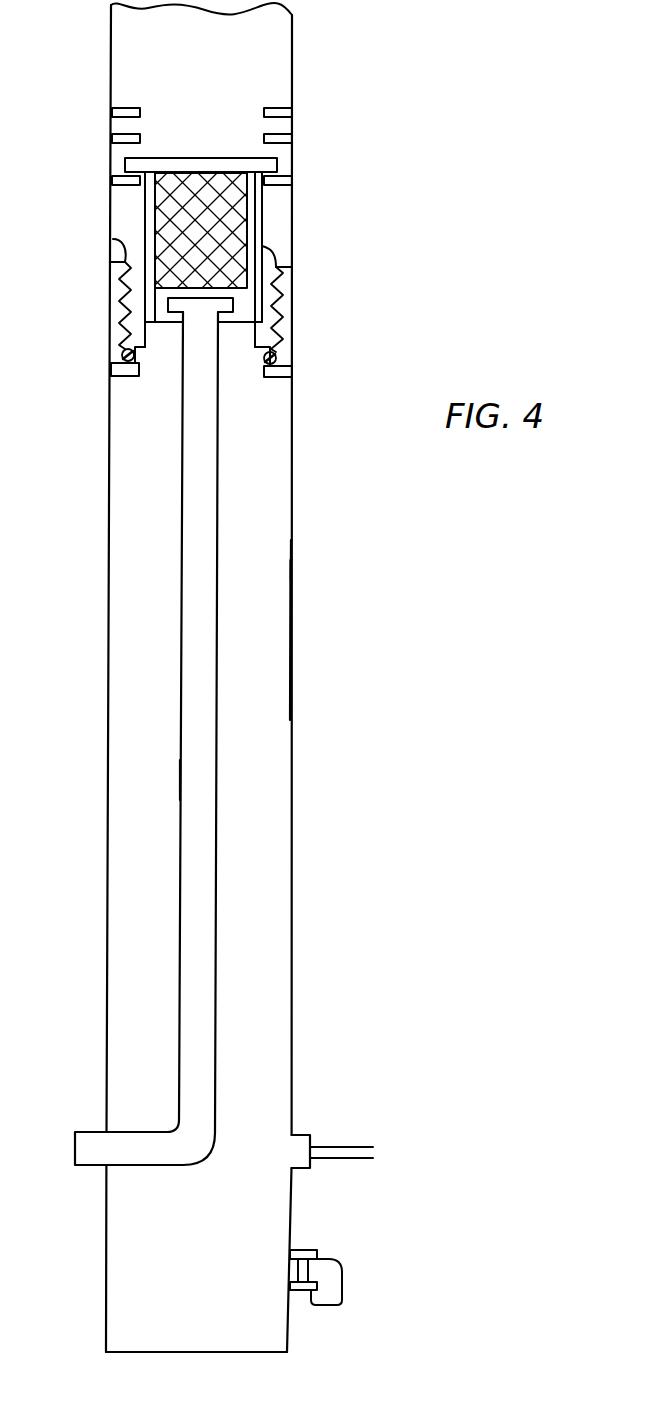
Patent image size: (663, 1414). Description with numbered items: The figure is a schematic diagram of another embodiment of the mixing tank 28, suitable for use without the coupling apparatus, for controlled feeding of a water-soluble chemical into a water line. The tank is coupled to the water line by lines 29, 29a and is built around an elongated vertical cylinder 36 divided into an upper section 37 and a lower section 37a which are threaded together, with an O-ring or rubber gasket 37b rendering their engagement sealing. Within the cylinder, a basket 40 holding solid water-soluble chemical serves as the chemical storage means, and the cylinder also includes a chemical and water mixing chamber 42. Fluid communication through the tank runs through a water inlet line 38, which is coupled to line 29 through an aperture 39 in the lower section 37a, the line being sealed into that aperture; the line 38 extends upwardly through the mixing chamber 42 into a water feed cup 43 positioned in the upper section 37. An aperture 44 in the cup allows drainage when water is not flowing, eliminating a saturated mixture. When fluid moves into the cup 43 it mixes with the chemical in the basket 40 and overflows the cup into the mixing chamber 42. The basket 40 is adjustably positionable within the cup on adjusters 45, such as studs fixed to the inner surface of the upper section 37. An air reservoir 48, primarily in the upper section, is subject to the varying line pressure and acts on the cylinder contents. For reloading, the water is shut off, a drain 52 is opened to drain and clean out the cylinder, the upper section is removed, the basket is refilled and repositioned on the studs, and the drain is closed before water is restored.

The mixing tank 28 is at (306, 560).
The line 29 is at (91, 1157).
The line 29a is at (355, 1144).
The elongated vertical cylinder 36 is at (108, 620).
The upper section 37 is at (294, 43).
The lower section 37a is at (292, 648).
The O-ring or rubber gasket 37b is at (277, 358).
The water inlet line 38 is at (216, 937).
The aperture 39 is at (108, 1131).
The basket 40 is at (158, 217).
The chemical and water mixing chamber 42 is at (244, 782).
The water feed cup 43 is at (259, 245).
The aperture 44 is at (164, 328).
The adjusters 45 is at (112, 137).
The air reservoir 48 is at (250, 78).
The drain 52 is at (326, 1249).